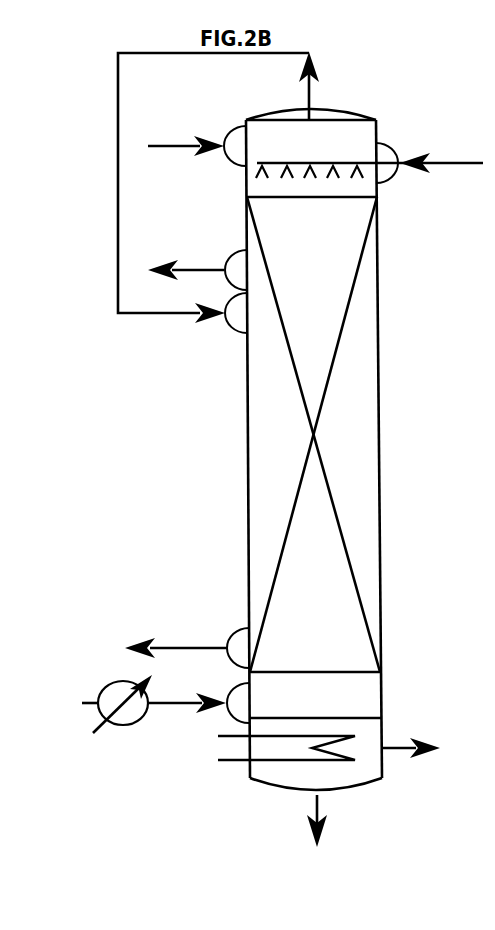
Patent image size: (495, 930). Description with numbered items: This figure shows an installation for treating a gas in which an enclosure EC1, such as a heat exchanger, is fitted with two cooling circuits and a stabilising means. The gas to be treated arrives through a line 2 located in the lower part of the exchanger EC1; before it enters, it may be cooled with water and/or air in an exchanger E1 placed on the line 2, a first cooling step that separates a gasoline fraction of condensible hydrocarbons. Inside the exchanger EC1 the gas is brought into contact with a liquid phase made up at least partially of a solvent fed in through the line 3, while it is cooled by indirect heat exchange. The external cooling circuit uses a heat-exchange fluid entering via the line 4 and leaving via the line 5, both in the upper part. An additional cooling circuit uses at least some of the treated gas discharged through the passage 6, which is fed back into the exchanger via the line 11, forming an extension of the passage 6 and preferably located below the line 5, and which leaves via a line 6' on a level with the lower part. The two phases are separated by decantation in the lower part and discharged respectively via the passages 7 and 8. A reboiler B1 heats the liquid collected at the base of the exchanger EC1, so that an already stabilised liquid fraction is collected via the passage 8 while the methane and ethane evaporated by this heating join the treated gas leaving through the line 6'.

The enclosure EC1 is at (351, 449).
The passage 6 is at (318, 86).
The line 4 is at (197, 144).
The line 3 is at (369, 169).
The line 5 is at (197, 262).
The line 11 is at (213, 197).
The line 6' is at (187, 645).
The line 2 is at (198, 714).
The exchanger E1 is at (117, 718).
The reboiler B1 is at (269, 763).
The passage 8 is at (420, 757).
The passage 7 is at (329, 822).